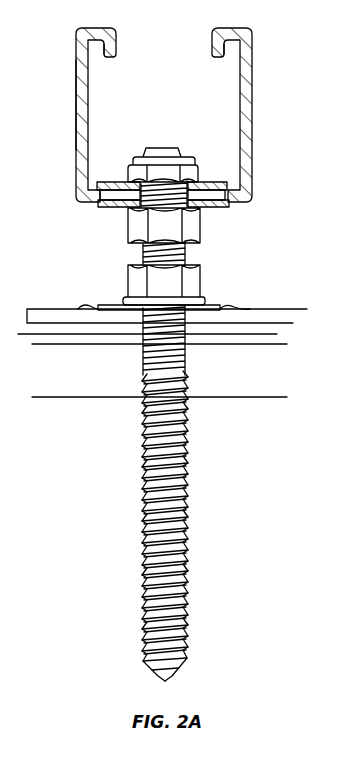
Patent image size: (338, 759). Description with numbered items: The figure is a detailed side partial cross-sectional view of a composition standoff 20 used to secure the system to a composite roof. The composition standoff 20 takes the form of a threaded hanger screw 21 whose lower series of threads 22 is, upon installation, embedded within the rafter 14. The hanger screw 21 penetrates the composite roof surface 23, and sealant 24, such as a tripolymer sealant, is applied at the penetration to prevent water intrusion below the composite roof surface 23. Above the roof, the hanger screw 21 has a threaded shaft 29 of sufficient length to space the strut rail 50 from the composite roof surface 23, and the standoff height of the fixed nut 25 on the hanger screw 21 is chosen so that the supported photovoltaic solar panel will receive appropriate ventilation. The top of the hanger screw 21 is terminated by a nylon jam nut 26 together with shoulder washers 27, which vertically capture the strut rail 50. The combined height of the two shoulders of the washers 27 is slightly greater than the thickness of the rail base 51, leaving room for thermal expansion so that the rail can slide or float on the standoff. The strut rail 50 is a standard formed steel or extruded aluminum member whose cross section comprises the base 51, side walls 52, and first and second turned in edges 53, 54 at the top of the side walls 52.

The rafter 14 is at (102, 530).
The composition standoff 20 is at (71, 256).
The hanger screw 21 is at (186, 352).
The threads 22 is at (188, 512).
The composite roof surface 23 is at (275, 310).
The sealant 24 is at (112, 301).
The fixed nut 25 is at (130, 228).
The nylon jam nut 26 is at (187, 161).
The shoulder washers 27 is at (118, 188).
The threaded shaft 29 is at (184, 253).
The strut rail 50 is at (82, 117).
The rail base 51 is at (227, 197).
The side walls 52 is at (77, 52).
The first turned in edge 53 is at (113, 47).
The second turned in edge 54 is at (210, 47).